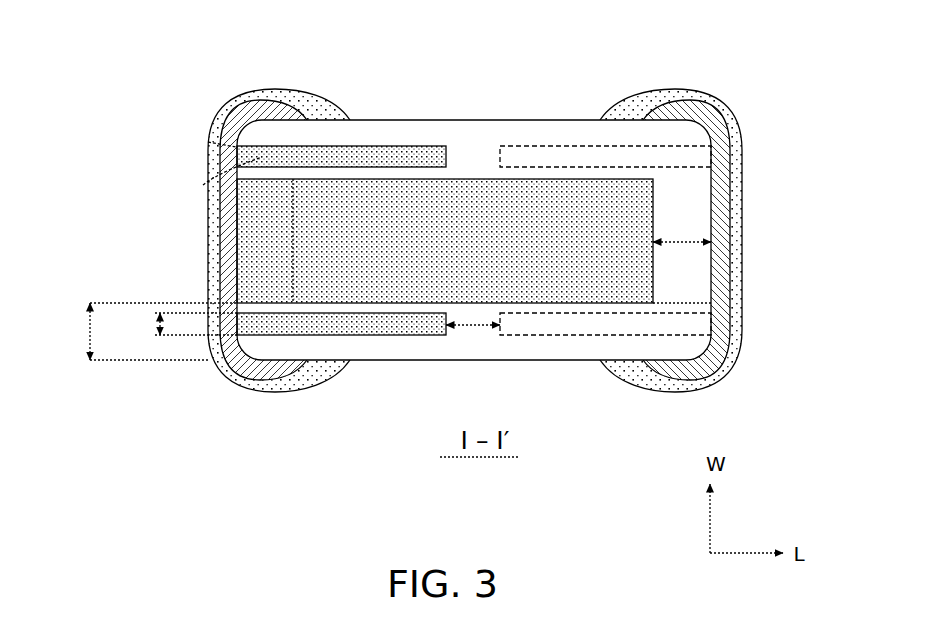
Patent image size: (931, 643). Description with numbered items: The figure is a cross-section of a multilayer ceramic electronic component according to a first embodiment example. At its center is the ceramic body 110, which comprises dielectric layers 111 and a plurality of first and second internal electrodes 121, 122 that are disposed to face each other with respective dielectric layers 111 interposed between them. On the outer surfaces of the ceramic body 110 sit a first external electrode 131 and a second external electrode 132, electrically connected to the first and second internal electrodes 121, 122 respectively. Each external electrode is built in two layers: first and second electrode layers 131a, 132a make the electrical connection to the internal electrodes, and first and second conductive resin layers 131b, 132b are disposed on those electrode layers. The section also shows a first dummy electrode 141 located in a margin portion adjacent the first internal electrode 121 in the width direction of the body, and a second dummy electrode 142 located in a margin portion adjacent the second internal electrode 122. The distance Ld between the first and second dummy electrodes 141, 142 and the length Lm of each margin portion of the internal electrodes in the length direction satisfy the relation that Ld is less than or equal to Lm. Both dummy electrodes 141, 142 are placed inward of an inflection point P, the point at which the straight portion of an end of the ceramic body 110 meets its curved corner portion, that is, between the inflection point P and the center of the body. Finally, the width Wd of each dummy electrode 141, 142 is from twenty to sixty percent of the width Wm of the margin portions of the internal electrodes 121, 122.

The ceramic body 110 is at (431, 120).
The dielectric layers 111 is at (476, 158).
The first internal electrode 121 is at (372, 257).
The second internal electrode 122 is at (676, 277).
The first external electrode 131 is at (267, 200).
The first electrode layer 131a is at (270, 215).
The first conductive resin layer 131b is at (221, 106).
The second external electrode 132 is at (682, 200).
The second electrode layer 132a is at (680, 215).
The second conductive resin layer 132b is at (723, 108).
The first dummy electrode 141 is at (206, 176).
The second dummy electrode 142 is at (744, 176).
The inflection point P is at (208, 142).
The width of the margin portion Wm is at (141, 331).
The width of the dummy electrode Wd is at (177, 324).
The length of the margin portion Lm is at (682, 226).
The distance between the dummy electrodes Ld is at (473, 340).